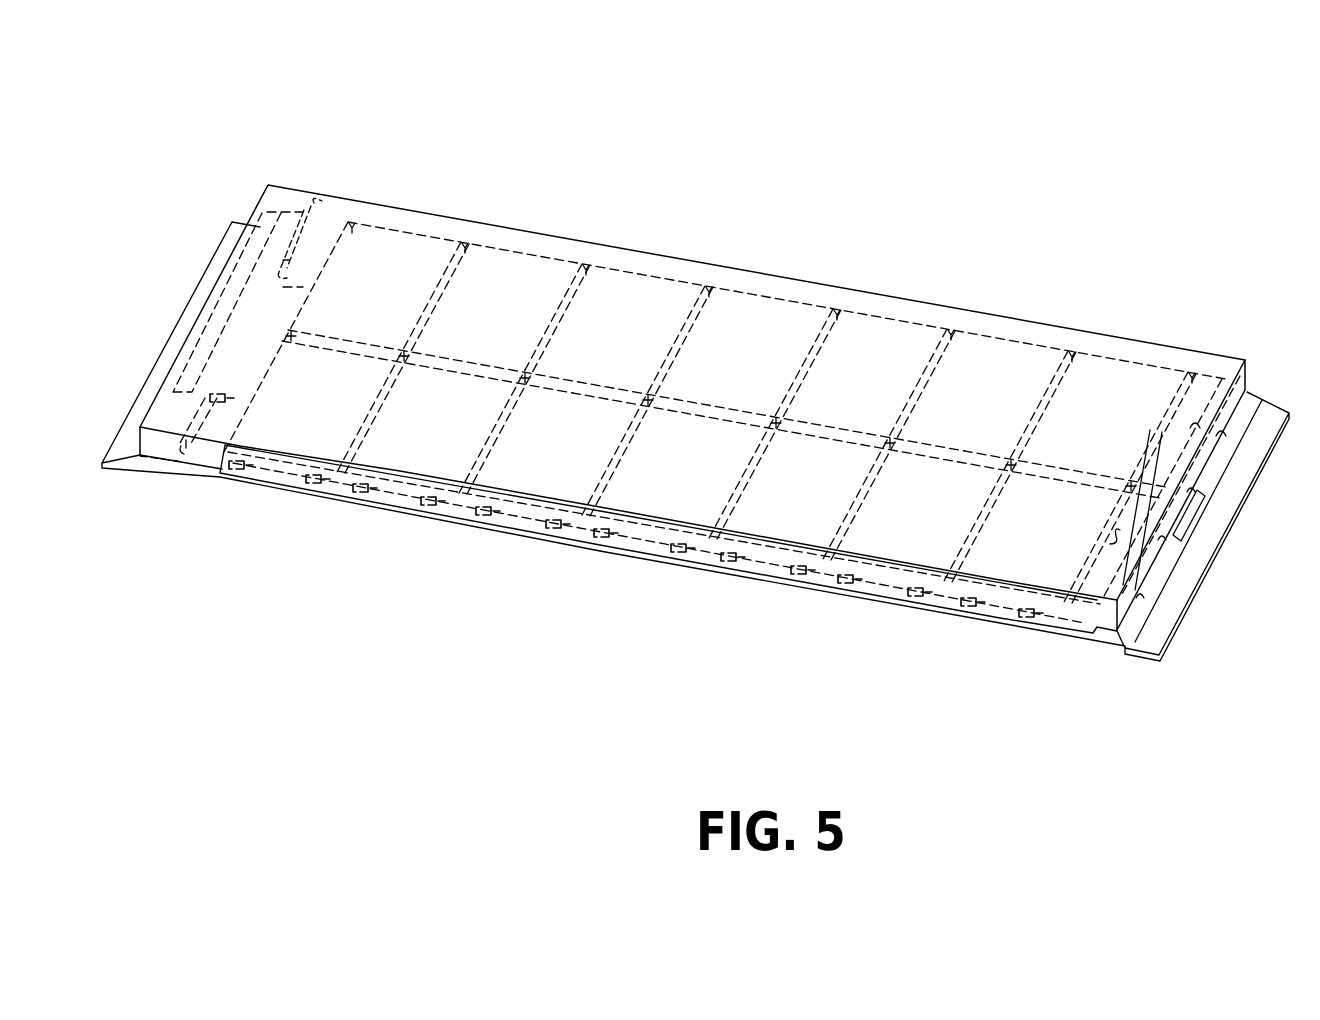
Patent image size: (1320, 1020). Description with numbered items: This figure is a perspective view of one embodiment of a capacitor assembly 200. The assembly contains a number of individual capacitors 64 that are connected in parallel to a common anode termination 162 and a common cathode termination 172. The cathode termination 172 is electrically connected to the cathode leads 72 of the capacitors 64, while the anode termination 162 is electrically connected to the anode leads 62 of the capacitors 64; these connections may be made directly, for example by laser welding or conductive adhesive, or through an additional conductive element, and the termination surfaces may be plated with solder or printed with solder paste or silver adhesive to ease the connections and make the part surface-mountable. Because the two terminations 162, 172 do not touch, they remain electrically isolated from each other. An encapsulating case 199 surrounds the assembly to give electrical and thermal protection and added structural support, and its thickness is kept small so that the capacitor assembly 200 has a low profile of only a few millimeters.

The capacitor assembly 200 is at (752, 142).
The encapsulating case 199 is at (848, 303).
The individual capacitor 64 is at (1106, 385).
The anode lead 62 is at (314, 344).
The anode termination 162 is at (272, 347).
The cathode lead 72 is at (310, 478).
The cathode termination 172 is at (252, 485).